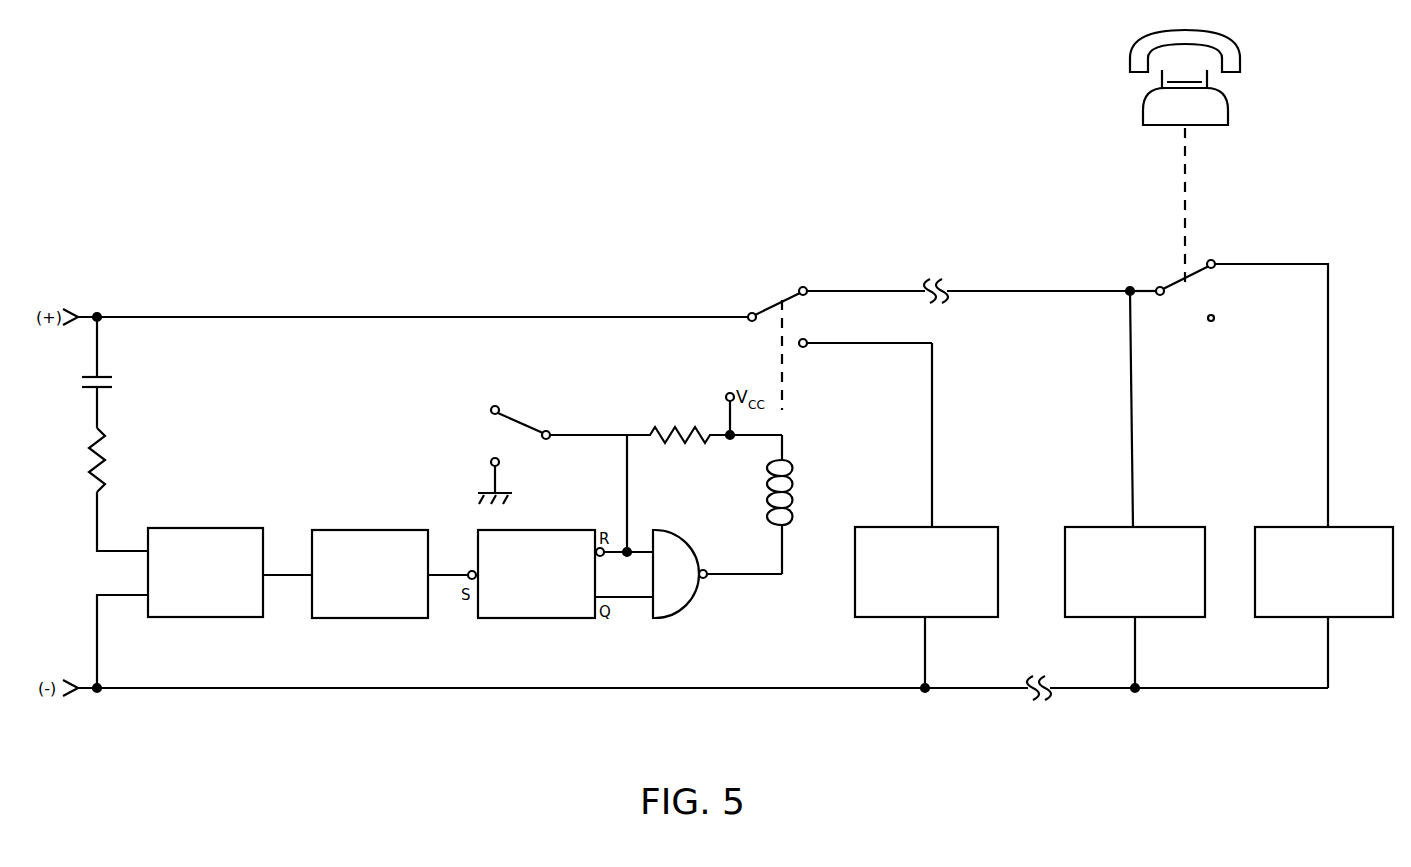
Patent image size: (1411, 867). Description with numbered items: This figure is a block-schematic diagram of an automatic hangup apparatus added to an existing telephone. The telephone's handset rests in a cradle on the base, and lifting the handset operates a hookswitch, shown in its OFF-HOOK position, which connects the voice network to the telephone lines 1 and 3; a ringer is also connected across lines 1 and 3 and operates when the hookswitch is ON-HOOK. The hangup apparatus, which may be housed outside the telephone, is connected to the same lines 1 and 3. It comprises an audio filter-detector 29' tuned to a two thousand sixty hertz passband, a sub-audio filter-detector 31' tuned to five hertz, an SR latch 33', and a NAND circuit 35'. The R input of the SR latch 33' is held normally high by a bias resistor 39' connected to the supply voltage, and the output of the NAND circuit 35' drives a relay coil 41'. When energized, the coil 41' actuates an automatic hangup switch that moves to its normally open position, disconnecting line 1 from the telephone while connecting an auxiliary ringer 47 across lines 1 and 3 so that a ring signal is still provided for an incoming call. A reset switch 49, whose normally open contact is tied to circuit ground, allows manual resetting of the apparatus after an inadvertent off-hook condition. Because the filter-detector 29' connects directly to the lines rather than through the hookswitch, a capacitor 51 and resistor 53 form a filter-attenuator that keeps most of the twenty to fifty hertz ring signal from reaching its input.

The line 1 is at (1074, 290).
The line 3 is at (1110, 688).
The audio filter-detector 29' is at (196, 596).
The sub-audio filter-detector 31' is at (370, 596).
The SR latch 33' is at (536, 595).
The NAND circuit 35' is at (678, 595).
The bias resistor 39' is at (678, 399).
The relay coil 41' is at (809, 504).
The auxiliary ringer 47 is at (873, 617).
The reset switch 49 is at (537, 404).
The capacitor 51 is at (78, 390).
The resistor 53 is at (97, 470).